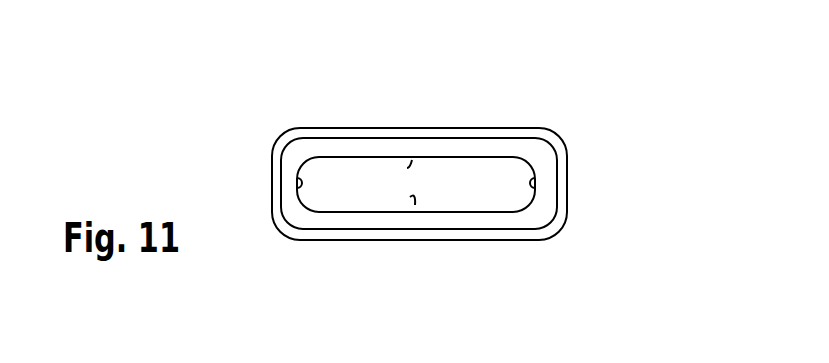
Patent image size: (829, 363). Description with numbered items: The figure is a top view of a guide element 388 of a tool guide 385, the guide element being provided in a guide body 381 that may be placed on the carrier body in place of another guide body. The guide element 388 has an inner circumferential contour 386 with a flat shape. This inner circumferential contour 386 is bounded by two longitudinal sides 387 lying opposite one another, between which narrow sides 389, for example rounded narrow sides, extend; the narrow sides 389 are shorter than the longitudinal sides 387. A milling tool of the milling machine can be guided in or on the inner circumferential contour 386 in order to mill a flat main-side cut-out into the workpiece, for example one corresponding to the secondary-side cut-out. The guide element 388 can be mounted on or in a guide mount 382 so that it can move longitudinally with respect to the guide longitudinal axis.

The guide body 381 is at (547, 137).
The guide mount 382 is at (545, 210).
The tool guide 385 is at (568, 160).
The inner circumferential contour 386 is at (482, 165).
The longitudinal sides 387 is at (407, 168).
The guide element 388 is at (292, 160).
The narrow sides 389 is at (535, 183).